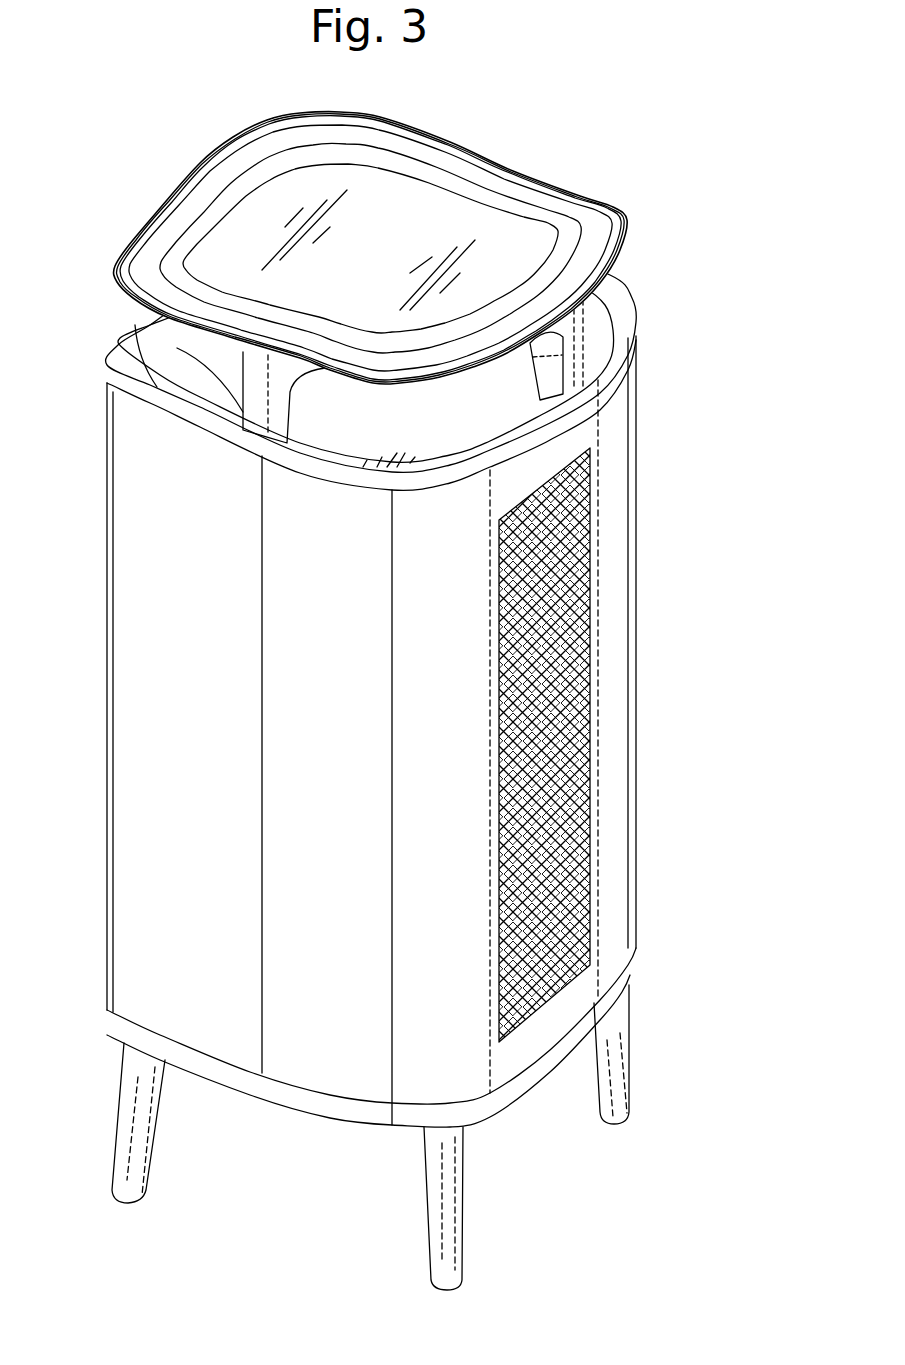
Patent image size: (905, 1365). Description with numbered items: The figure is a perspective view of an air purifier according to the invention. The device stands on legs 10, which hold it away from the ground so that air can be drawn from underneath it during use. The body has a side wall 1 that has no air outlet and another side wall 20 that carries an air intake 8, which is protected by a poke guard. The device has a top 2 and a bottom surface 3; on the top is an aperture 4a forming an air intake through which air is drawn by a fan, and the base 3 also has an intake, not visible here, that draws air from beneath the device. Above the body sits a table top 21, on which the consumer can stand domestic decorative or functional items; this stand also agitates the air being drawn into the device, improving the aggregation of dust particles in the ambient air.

The side wall 1 is at (152, 823).
The top 2 is at (630, 331).
The bottom surface 3 is at (625, 988).
The aperture 4a is at (468, 406).
The air intake 8 is at (575, 755).
The legs 10 is at (632, 1104).
The side wall 20 is at (618, 613).
The table top 21 is at (629, 215).